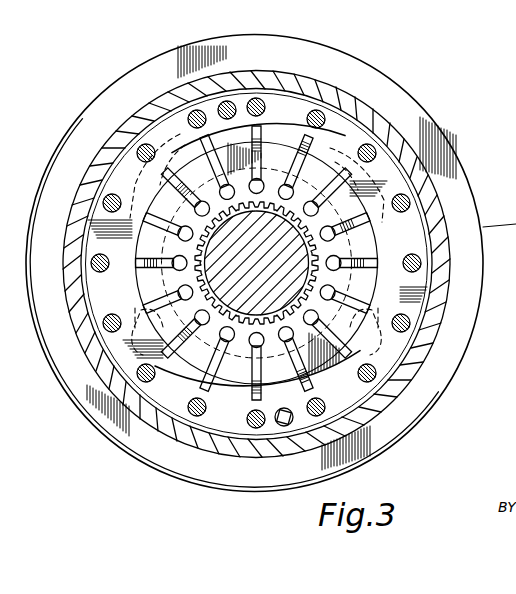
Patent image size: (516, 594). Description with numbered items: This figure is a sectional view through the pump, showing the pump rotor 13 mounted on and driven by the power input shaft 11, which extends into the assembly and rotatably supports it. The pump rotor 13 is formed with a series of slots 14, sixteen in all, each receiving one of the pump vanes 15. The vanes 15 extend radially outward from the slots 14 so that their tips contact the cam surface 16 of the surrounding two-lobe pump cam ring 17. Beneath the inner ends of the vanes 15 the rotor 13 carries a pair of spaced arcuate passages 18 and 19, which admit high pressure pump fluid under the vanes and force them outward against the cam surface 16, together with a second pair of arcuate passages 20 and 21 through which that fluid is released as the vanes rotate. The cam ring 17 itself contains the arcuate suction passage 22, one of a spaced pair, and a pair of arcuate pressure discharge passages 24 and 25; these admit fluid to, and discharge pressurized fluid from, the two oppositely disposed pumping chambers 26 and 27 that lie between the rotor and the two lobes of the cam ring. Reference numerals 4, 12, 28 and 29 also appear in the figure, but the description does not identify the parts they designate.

The lever 4 is at (220, 367).
The power input shaft 11 is at (178, 262).
The flywheel housing ring 12 is at (463, 150).
The pump rotor 13 is at (378, 238).
The slots 14 is at (313, 207).
The pump vanes 15 is at (258, 185).
The cam surface 16 is at (278, 122).
The pump cam ring 17 is at (390, 284).
The arcuate shaped passage 18 is at (192, 318).
The arcuate shaped passage 19 is at (330, 230).
The arcuate shaped passage 20 is at (185, 217).
The arcuate shaped passage 21 is at (258, 386).
The suction passage 22 is at (180, 148).
The pressure discharge passage 24 is at (325, 152).
The pressure discharge passage 25 is at (190, 372).
The pumping chamber 26 is at (283, 145).
The pumping chamber 27 is at (218, 387).
The hatched ring 28 is at (397, 140).
The bolt 29 is at (414, 272).